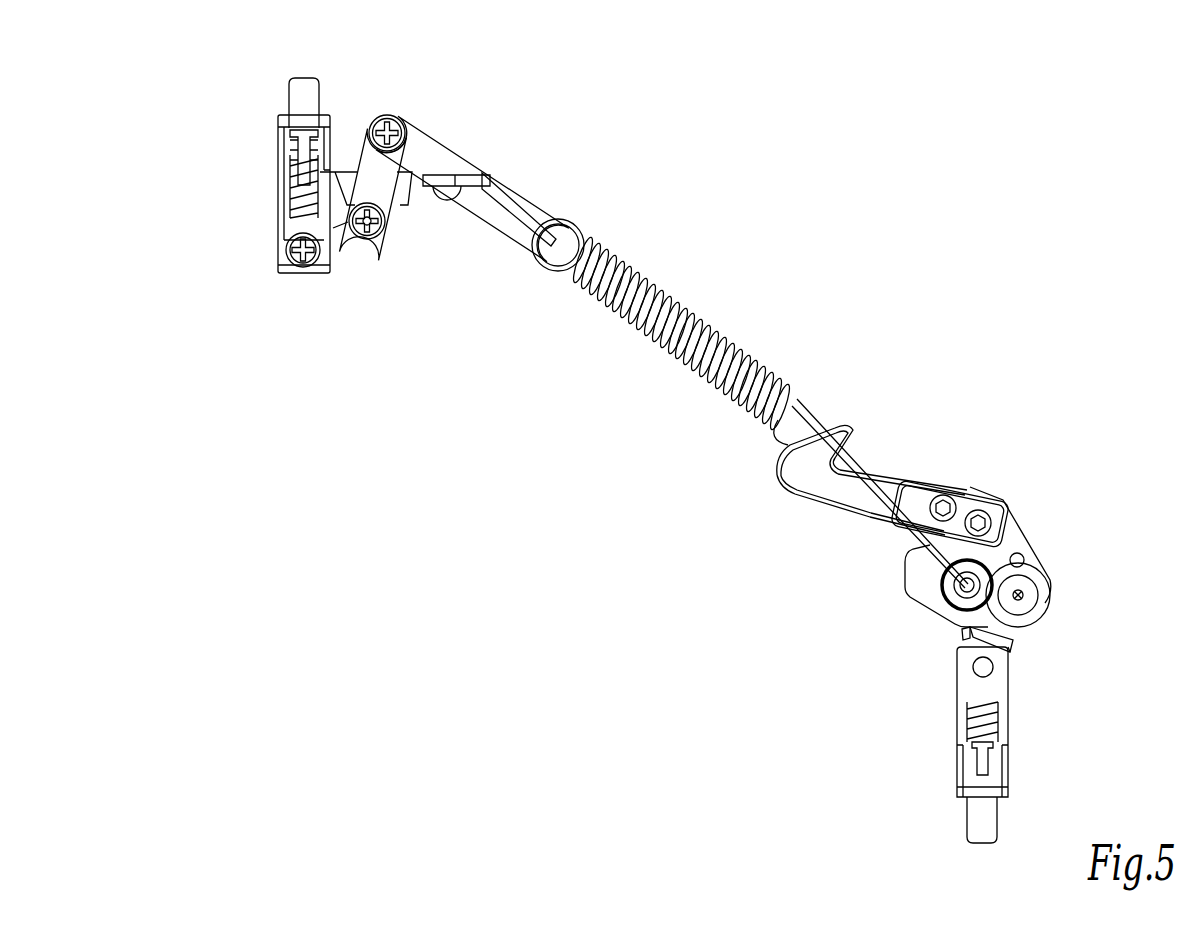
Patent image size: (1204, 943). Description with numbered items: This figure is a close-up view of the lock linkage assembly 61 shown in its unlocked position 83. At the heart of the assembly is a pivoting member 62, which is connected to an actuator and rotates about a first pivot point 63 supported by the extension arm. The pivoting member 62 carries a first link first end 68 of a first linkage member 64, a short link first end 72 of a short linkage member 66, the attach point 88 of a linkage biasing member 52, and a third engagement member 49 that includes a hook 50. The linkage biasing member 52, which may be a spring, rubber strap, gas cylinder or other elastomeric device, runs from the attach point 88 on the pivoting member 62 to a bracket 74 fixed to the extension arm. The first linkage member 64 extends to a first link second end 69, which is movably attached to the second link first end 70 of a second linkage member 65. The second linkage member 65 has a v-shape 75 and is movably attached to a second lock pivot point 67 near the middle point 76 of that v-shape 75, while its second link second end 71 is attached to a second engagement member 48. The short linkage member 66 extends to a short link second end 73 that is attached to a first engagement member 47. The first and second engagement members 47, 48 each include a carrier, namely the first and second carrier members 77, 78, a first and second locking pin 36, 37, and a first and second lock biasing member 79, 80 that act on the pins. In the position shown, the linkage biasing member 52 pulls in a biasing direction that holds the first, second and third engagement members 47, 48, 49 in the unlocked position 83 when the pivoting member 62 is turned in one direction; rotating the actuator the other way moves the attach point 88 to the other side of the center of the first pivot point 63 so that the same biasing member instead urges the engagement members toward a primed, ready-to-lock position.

The first locking pin 36 is at (993, 826).
The second locking pin 37 is at (303, 78).
The first engagement member 47 is at (940, 645).
The second engagement member 48 is at (205, 80).
The third engagement member 49 is at (813, 510).
The hook 50 is at (850, 431).
The linkage biasing member 52 is at (630, 272).
The lock linkage assembly 61 is at (803, 263).
The pivoting member 62 is at (1022, 540).
The first pivot point 63 is at (956, 587).
The first linkage member 64 is at (816, 413).
The second linkage member 65 is at (392, 207).
The short linkage member 66 is at (968, 636).
The second lock pivot point 67 is at (367, 232).
The first link first end 68 is at (886, 463).
The first link second end 69 is at (418, 132).
The second link first end 70 is at (360, 112).
The second link second end 71 is at (343, 262).
The short link first end 72 is at (1017, 628).
The short link second end 73 is at (1012, 650).
The bracket 74 is at (478, 171).
The v-shape 75 is at (393, 188).
The middle point 76 is at (380, 243).
The first carrier member 77 is at (1003, 684).
The second carrier member 78 is at (289, 228).
The first lock biasing member 79 is at (998, 722).
The second lock biasing member 80 is at (294, 177).
The unlocked position 83 is at (287, 282).
The attach point 88 is at (1033, 597).